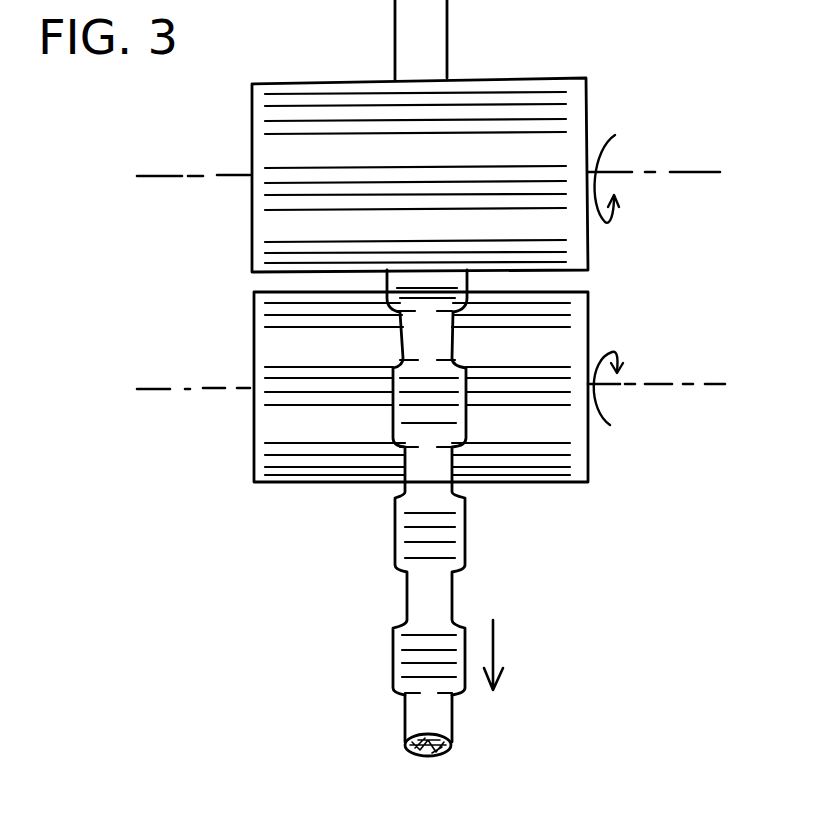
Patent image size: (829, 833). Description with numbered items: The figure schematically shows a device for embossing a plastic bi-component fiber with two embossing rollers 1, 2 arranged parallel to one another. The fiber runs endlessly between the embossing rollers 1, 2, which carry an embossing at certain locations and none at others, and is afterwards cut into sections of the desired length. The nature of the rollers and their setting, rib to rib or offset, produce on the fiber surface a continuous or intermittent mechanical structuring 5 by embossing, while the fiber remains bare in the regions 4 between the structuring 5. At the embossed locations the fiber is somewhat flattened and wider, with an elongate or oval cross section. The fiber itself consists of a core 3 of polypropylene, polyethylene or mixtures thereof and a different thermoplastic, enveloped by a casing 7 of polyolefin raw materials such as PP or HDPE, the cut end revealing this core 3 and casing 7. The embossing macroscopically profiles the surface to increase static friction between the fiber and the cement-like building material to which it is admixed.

The embossing roller 1 is at (277, 221).
The embossing roller 2 is at (277, 424).
The core 3 is at (412, 757).
The regions 4 is at (433, 30).
The mechanical structuring 5 is at (433, 542).
The casing 7 is at (440, 762).